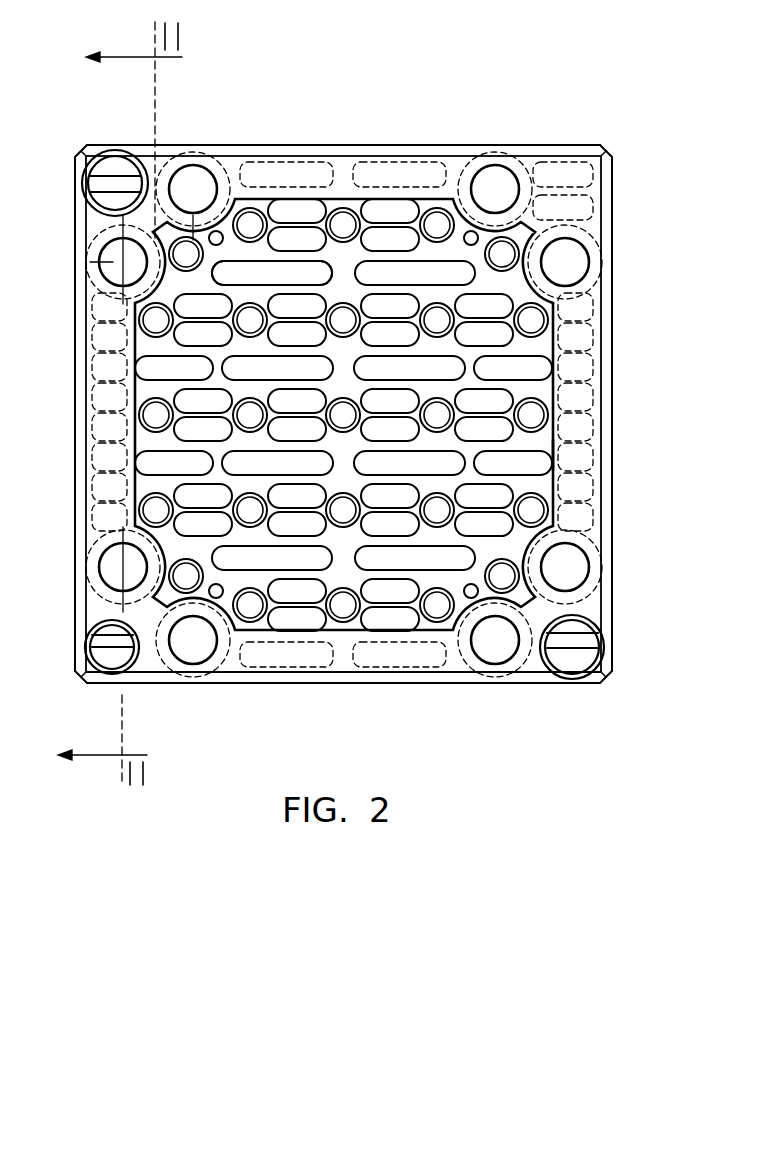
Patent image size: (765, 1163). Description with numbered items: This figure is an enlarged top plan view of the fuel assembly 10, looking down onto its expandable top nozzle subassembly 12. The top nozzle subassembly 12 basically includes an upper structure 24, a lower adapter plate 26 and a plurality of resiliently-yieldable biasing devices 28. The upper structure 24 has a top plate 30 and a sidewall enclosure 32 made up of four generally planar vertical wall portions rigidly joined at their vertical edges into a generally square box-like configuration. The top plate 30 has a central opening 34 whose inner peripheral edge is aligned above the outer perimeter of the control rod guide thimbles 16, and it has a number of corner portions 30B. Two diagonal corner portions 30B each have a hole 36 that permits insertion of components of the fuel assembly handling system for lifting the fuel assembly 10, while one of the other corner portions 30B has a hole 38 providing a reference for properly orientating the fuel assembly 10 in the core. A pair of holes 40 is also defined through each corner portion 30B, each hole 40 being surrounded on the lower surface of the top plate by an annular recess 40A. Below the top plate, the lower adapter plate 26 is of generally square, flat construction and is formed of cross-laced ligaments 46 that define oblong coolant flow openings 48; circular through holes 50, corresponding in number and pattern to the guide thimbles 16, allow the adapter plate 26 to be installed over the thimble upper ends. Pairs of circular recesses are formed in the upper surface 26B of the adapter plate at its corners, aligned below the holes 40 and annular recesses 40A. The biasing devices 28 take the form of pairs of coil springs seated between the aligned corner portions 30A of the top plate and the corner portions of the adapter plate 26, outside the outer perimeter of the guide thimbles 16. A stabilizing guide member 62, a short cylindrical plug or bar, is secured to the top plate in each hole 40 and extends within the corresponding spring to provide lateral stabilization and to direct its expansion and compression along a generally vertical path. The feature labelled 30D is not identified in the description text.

The fuel assembly 10 is at (600, 55).
The expandable top nozzle subassembly 12 is at (594, 128).
The control rod guide thimbles 16 is at (505, 268).
The upper structure 24 is at (618, 350).
The lower adapter plate 26 is at (497, 552).
The upper surface of the adapter plate 26B is at (338, 283).
The resiliently-yieldable biasing devices 28 is at (233, 162).
The top plate 30 is at (340, 674).
The corner portions of the top plate 30A is at (410, 676).
The corner portions of the top plate 30B is at (80, 203).
The side recess 30D is at (560, 418).
The sidewall enclosure 32 is at (393, 146).
The central opening 34 is at (136, 330).
The hole 36 is at (103, 165).
The hole 38 is at (97, 640).
The holes 40 is at (190, 183).
The annular recess 40A is at (500, 158).
The cross-laced ligaments 46 is at (197, 482).
The coolant flow openings 48 is at (340, 368).
The circular through holes 50 is at (453, 236).
The stabilizing guide member 62 is at (198, 170).